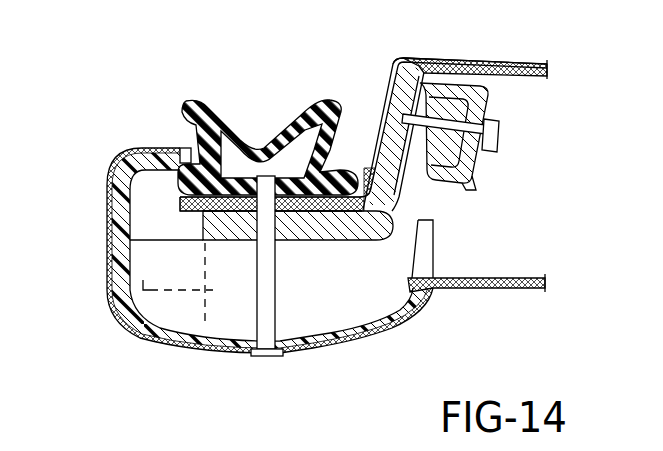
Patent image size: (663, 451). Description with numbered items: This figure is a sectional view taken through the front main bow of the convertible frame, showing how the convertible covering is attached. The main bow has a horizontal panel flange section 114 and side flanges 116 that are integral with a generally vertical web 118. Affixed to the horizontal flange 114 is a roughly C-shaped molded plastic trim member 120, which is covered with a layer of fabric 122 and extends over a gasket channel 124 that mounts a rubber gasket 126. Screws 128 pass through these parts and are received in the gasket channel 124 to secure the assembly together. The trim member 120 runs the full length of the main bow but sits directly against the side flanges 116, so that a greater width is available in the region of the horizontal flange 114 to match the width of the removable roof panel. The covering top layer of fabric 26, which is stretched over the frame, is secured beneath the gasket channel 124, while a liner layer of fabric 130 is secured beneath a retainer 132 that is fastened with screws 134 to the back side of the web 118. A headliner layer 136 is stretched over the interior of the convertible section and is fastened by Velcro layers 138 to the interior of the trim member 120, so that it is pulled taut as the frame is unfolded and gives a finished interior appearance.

The fabric covering 26 is at (390, 68).
The horizontal panel flange section 114 is at (296, 232).
The side flanges 116 is at (171, 283).
The vertical web 118 is at (395, 202).
The trim member 120 is at (123, 321).
The layer of fabric 122 is at (152, 346).
The gasket channel 124 is at (182, 198).
The rubber gasket 126 is at (207, 106).
The screws 128 is at (280, 297).
The liner layer of fabric 130 is at (517, 75).
The retainer 132 is at (472, 178).
The screws 134 is at (505, 131).
The headliner layer 136 is at (463, 278).
The Velcro layers 138 is at (414, 306).